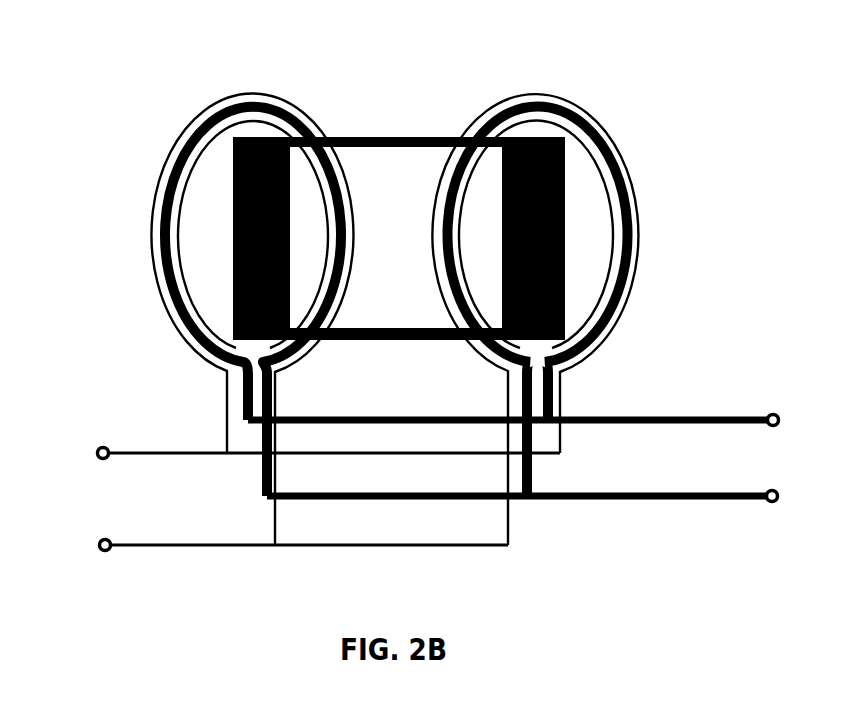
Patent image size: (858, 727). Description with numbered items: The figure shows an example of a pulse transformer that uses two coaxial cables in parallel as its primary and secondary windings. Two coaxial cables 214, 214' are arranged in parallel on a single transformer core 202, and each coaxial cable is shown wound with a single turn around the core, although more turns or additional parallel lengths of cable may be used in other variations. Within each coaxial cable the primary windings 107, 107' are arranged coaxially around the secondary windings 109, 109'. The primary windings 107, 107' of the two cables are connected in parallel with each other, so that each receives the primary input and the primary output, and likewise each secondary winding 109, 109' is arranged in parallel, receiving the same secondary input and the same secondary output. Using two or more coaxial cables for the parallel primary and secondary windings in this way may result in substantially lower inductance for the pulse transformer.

The coaxial cable 214 is at (252, 287).
The coaxial cable 214' is at (535, 287).
The transformer core 202 is at (583, 229).
The primary winding 107 is at (302, 467).
The primary winding 107' is at (276, 551).
The secondary winding 109 is at (536, 430).
The secondary winding 109' is at (547, 508).